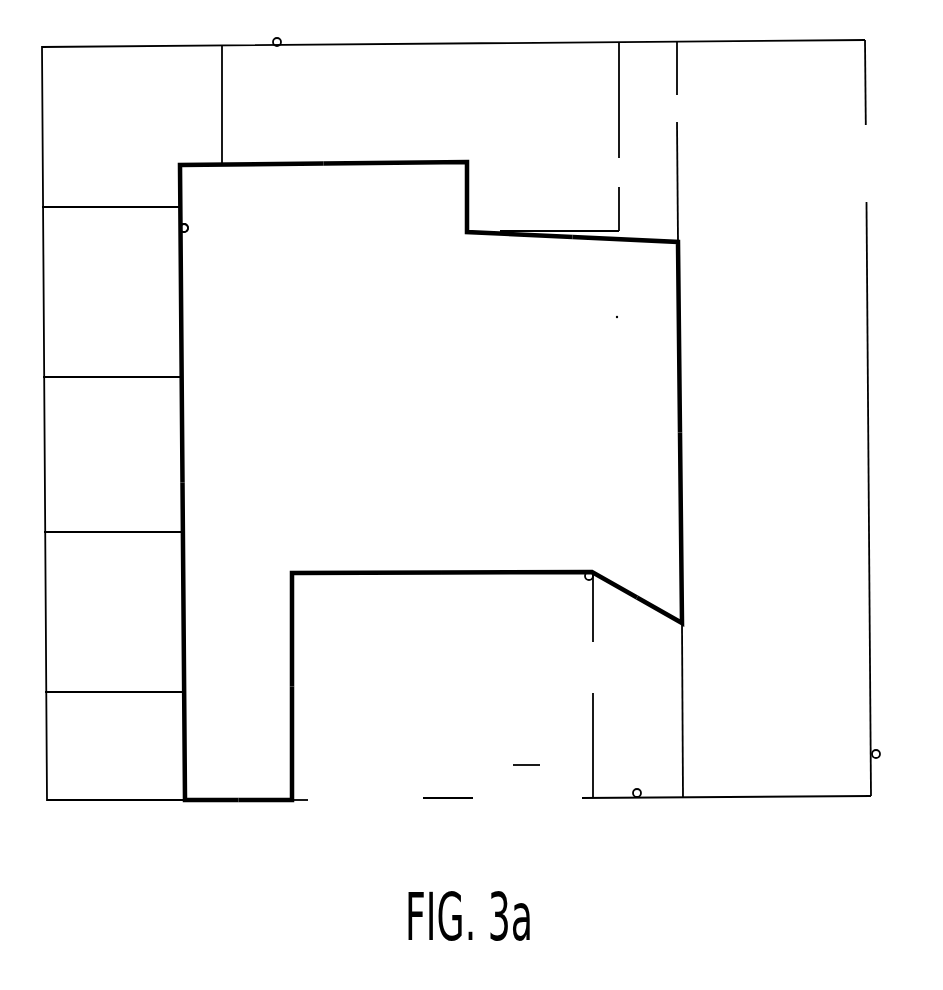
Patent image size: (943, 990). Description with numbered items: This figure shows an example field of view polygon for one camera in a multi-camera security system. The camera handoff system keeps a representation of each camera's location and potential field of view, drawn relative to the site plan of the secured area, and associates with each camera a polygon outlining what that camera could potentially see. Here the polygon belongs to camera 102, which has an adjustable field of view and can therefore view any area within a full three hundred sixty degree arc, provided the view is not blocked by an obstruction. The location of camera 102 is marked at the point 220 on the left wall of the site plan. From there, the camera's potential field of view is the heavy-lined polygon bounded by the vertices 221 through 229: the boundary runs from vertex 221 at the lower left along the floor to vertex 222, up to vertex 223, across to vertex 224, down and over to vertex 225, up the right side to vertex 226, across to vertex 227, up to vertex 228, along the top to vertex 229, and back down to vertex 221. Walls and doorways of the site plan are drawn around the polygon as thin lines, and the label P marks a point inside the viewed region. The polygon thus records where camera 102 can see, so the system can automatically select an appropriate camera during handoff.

The camera 102 is at (180, 229).
The camera location 220 is at (188, 227).
The vertex 221 is at (184, 802).
The vertex 222 is at (293, 802).
The vertex 223 is at (294, 575).
The vertex 224 is at (592, 570).
The vertex 225 is at (684, 622).
The vertex 226 is at (680, 242).
The vertex 227 is at (469, 230).
The vertex 228 is at (468, 161).
The vertex 229 is at (177, 163).
The reference point P is at (625, 323).